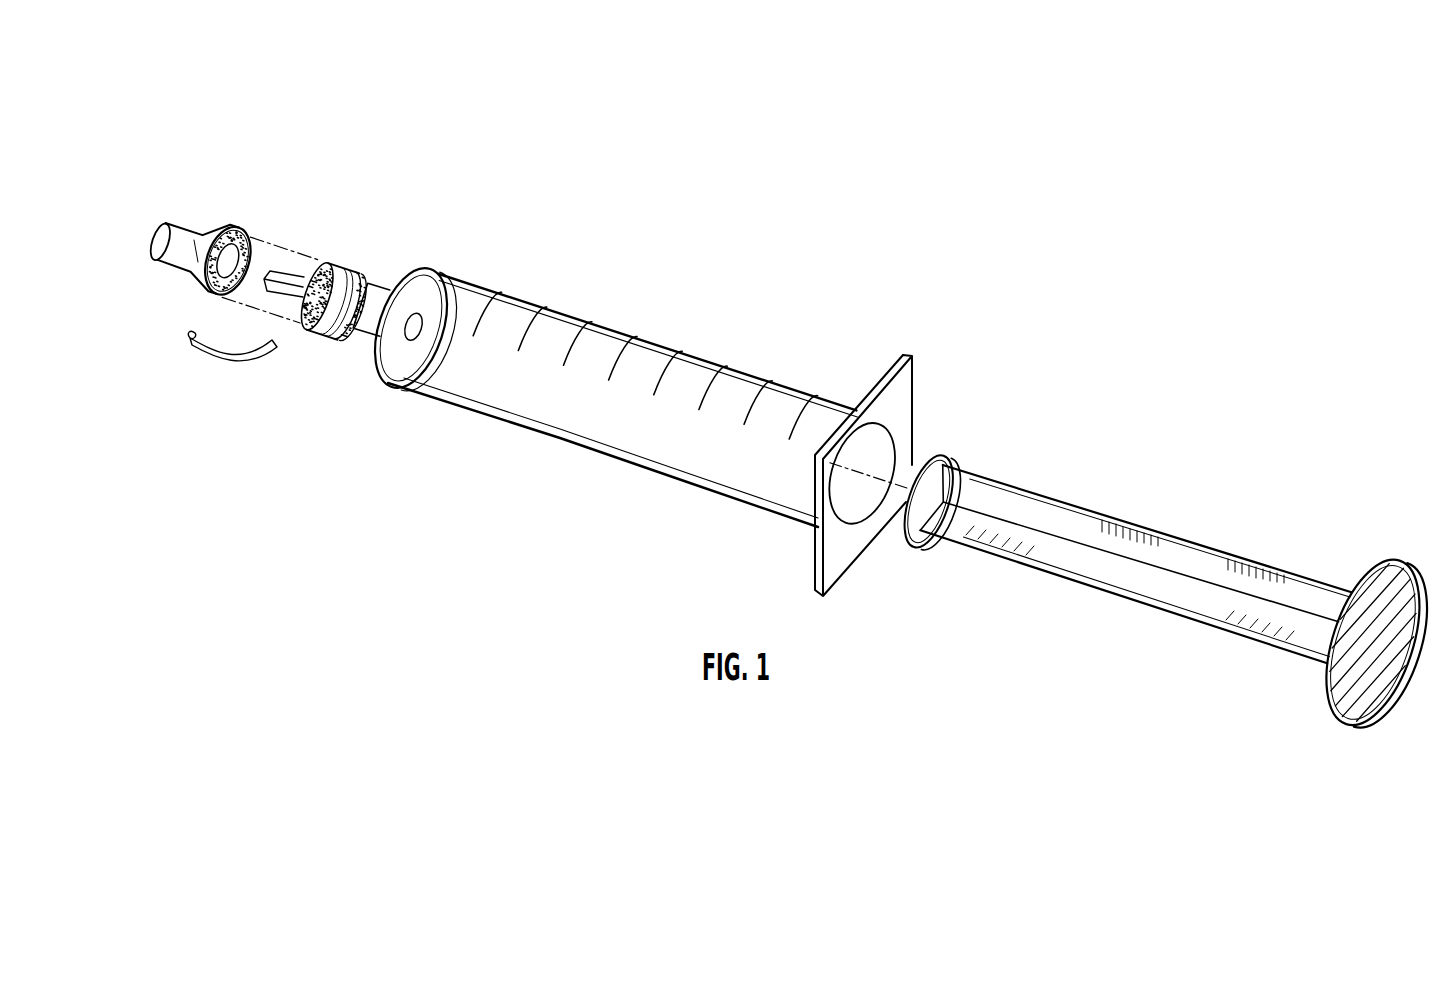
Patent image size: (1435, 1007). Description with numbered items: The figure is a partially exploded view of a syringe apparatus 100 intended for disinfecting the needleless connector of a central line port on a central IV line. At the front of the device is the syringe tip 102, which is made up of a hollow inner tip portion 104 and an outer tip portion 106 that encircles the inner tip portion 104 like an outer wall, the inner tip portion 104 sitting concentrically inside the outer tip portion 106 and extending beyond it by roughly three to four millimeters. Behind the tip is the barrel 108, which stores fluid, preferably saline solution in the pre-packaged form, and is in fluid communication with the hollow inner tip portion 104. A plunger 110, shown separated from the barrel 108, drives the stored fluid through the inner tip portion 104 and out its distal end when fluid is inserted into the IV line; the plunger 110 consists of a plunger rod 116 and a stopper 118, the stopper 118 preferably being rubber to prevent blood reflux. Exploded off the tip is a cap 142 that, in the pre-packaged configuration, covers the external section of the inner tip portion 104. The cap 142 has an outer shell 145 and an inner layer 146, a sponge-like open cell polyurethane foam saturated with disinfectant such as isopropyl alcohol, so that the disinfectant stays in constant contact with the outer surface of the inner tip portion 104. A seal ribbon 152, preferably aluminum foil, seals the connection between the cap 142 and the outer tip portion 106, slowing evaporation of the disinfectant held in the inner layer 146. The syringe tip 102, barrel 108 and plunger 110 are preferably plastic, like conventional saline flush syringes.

The syringe apparatus 100 is at (773, 424).
The syringe tip 102 is at (841, 456).
The inner tip portion 104 is at (289, 297).
The outer tip portion 106 is at (332, 322).
The barrel 108 is at (657, 357).
The plunger 110 is at (1165, 550).
The plunger rod 116 is at (1203, 565).
The stopper 118 is at (932, 448).
The cap 142 is at (219, 216).
The outer shell 145 is at (204, 263).
The inner layer 146 is at (257, 242).
The seal ribbon 152 is at (243, 362).